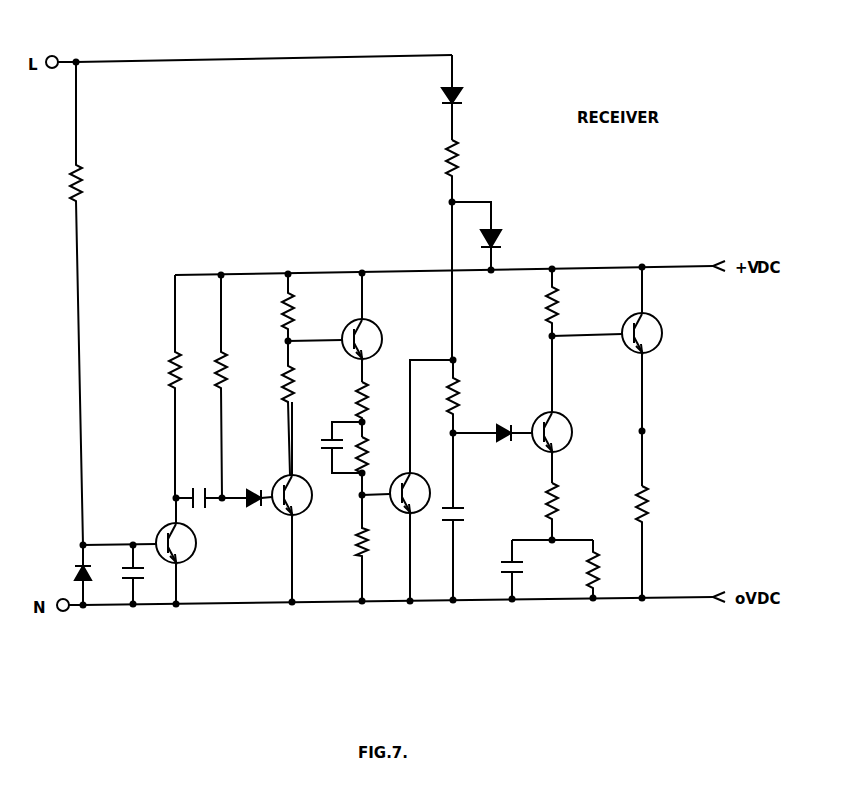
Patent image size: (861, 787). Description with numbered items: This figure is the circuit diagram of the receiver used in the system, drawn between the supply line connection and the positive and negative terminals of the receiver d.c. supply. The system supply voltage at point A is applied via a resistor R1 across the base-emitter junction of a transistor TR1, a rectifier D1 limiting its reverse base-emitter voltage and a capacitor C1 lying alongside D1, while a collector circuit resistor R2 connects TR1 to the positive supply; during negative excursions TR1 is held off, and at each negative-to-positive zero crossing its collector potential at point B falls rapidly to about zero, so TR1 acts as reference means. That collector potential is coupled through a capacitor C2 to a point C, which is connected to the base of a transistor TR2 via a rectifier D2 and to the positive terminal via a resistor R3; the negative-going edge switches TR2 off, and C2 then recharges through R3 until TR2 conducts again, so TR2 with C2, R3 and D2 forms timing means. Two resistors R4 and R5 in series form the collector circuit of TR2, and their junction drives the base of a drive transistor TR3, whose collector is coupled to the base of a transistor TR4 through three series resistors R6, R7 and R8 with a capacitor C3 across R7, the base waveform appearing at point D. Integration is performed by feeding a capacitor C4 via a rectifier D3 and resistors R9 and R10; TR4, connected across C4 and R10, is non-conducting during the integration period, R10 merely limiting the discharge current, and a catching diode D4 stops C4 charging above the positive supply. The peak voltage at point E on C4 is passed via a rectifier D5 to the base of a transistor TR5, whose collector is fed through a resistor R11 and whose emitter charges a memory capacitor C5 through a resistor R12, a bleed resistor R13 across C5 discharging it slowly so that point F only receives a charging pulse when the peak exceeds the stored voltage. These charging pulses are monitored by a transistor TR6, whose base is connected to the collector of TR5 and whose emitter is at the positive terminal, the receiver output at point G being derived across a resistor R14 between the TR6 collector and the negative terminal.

The supply voltage point A is at (107, 59).
The collector potential point of transistor TR1 B is at (172, 497).
The timing point C is at (226, 494).
The base potential point of transistor TR4 D is at (380, 500).
The integration voltage point E is at (480, 436).
The memory capacitor voltage point F is at (593, 540).
The receiver output G is at (642, 431).
The resistor R1 is at (92, 303).
The collector circuit resistor R2 is at (159, 386).
The resistor R3 is at (208, 386).
The resistor R4 is at (275, 408).
The resistor R5 is at (302, 307).
The series resistor R6 is at (348, 409).
The series resistor R7 is at (375, 466).
The series resistor R8 is at (349, 548).
The resistor R9 is at (467, 171).
The resistor R10 is at (472, 396).
The resistor R11 is at (571, 302).
The resistor R12 is at (571, 511).
The bleed resistor R13 is at (613, 630).
The resistor R14 is at (662, 542).
The capacitor C1 is at (143, 574).
The capacitor C2 is at (199, 507).
The capacitor C3 is at (330, 447).
The capacitor C4 is at (469, 516).
The memory capacitor C5 is at (524, 569).
The rectifier D1 is at (68, 575).
The rectifier D2 is at (247, 508).
The rectifier D3 is at (467, 97).
The catching diode D4 is at (492, 236).
The rectifier D5 is at (492, 443).
The transistor TR1 is at (156, 551).
The transistor TR2 is at (309, 502).
The drive transistor TR3 is at (379, 327).
The transistor TR4 is at (421, 480).
The transistor TR5 is at (570, 409).
The transistor TR6 is at (661, 376).